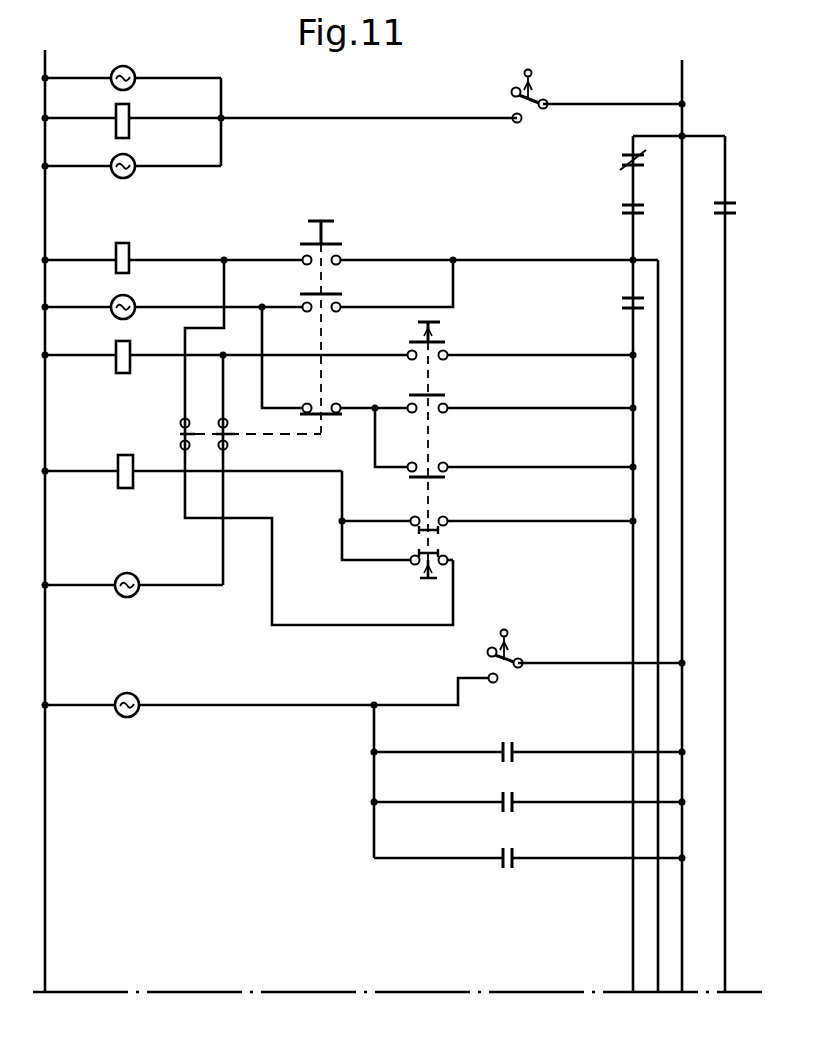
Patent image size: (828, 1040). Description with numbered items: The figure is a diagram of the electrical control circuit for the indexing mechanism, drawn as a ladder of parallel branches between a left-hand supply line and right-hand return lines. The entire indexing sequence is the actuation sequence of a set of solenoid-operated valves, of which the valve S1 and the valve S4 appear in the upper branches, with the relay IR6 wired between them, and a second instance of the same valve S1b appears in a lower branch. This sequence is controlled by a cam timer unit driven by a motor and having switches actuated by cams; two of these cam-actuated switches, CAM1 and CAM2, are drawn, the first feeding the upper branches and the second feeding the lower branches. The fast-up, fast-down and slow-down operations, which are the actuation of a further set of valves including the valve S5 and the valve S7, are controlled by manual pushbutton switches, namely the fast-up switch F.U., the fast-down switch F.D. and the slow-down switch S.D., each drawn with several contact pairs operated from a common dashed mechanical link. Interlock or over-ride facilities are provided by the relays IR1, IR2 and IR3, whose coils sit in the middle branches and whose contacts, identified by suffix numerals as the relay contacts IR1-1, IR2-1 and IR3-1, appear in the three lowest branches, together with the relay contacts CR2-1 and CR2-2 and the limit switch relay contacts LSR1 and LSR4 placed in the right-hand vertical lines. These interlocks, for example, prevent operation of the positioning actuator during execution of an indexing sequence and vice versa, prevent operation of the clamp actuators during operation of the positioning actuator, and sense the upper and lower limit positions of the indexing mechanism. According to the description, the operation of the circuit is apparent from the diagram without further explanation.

The solenoid-operated valve S1 is at (133, 63).
The relay IR6 is at (283, 115).
The solenoid-operated valve S4 is at (133, 179).
The cam-actuated switch CAM1 is at (595, 74).
The relay contact CR2-1 is at (725, 202).
The relay contact CR2-2 is at (602, 162).
The limit switch relay contact LSR1 is at (606, 211).
The limit switch relay contact LSR4 is at (606, 306).
The relay IR2 is at (173, 253).
The solenoid-operated valve S5 is at (173, 299).
The manual switch F.U. is at (321, 313).
The relay IR1 is at (226, 372).
The manual switch F.D. is at (448, 450).
The relay IR3 is at (193, 456).
The manual switch S.D. is at (431, 562).
The solenoid-operated valve S7 is at (134, 572).
The solenoid-operated valve S1b is at (271, 693).
The cam-actuated switch CAM2 is at (585, 635).
The relay contact IR1-1 is at (528, 742).
The relay contact IR2-1 is at (528, 792).
The relay contact IR3-1 is at (528, 848).